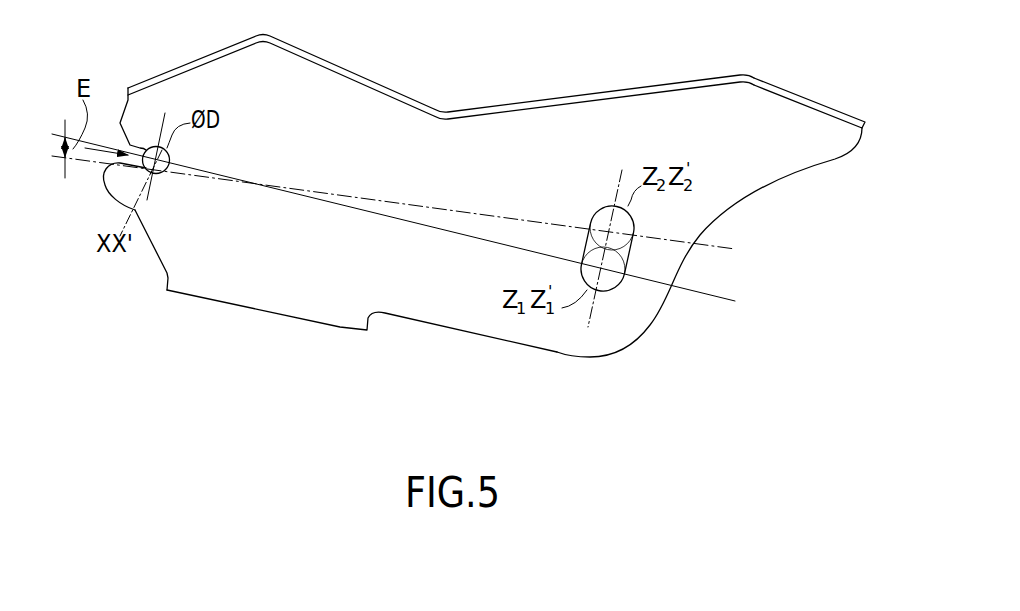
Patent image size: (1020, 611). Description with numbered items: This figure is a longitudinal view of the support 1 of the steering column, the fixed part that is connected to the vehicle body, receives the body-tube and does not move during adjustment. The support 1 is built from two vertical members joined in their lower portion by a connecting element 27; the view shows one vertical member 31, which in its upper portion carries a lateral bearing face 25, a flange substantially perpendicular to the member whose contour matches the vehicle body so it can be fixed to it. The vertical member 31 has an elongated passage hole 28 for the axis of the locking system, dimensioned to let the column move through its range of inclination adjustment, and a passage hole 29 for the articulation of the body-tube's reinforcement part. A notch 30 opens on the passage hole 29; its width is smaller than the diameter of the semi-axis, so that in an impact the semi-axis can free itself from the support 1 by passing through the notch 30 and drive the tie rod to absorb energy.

The support 1 is at (527, 98).
The lateral bearing face 25 is at (798, 90).
The connecting element 27 is at (255, 310).
The elongated passage hole 28 is at (627, 255).
The passage hole 29 is at (165, 177).
The notch 30 is at (120, 163).
The vertical member 31 is at (467, 183).